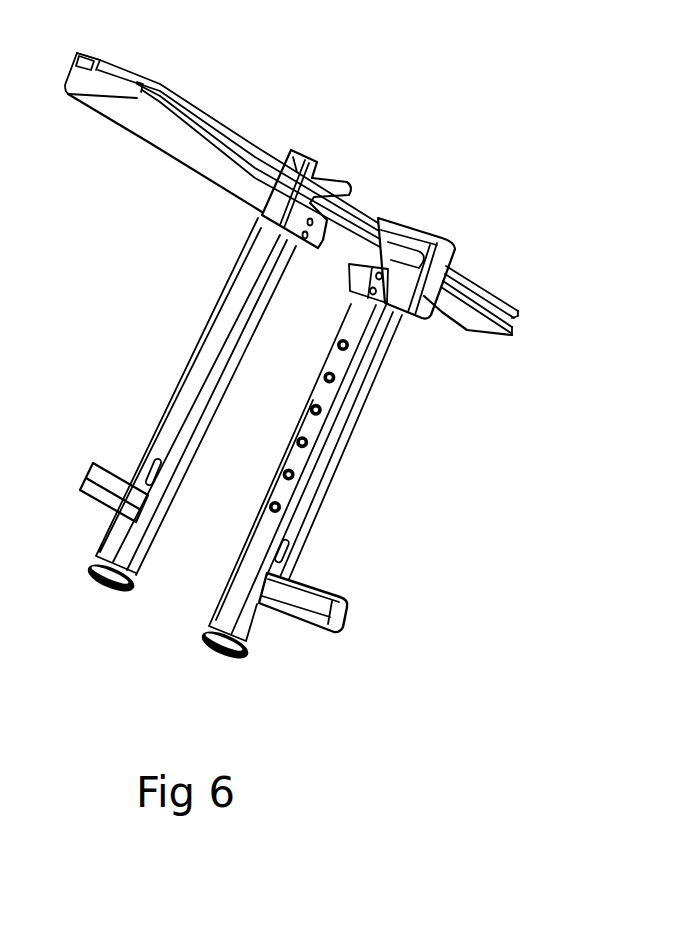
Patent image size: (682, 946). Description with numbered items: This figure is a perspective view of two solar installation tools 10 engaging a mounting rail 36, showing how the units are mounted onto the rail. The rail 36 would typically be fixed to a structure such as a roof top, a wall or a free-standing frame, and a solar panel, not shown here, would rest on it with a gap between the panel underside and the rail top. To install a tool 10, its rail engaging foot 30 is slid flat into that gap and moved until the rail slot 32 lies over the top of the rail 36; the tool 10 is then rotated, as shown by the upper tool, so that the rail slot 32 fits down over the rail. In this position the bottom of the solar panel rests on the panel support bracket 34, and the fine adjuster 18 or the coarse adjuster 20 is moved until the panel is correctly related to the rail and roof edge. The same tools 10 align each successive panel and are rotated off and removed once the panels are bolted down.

The solar installation tool 10 is at (217, 327).
The fine adjuster 18 is at (203, 640).
The coarse adjuster 20 is at (312, 398).
The rail engaging foot 30 is at (292, 148).
The rail slot 32 is at (405, 233).
The panel support bracket 34 is at (112, 500).
The rail 36 is at (135, 120).